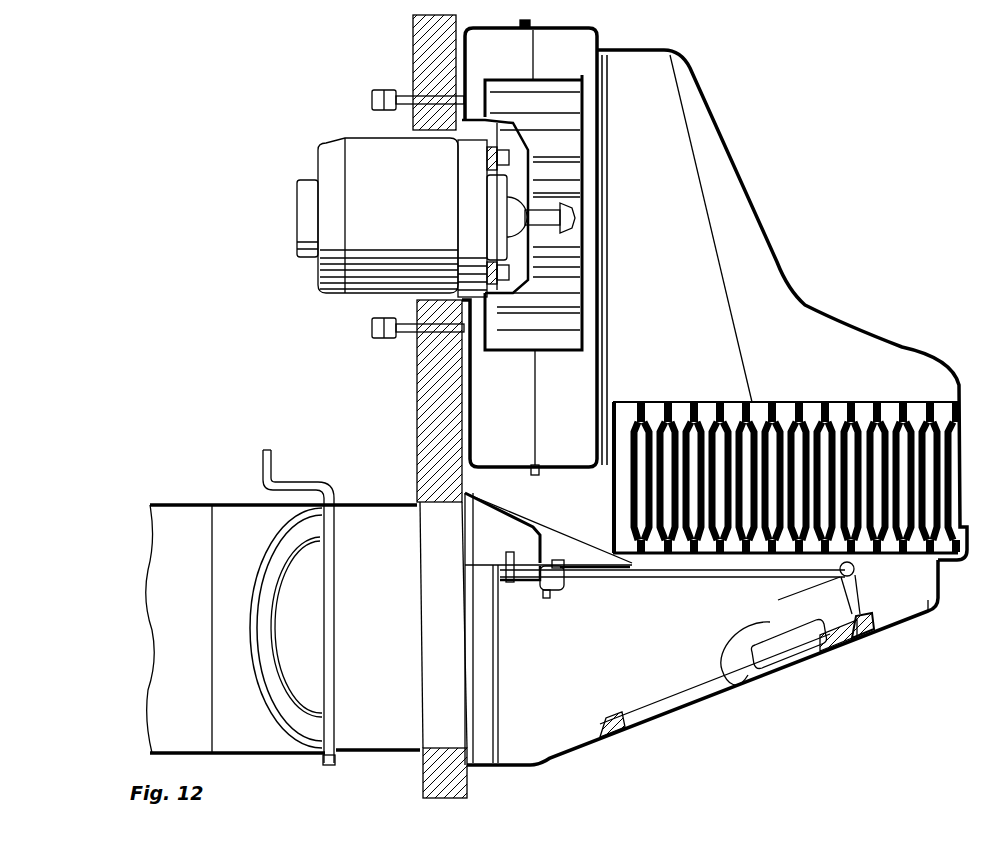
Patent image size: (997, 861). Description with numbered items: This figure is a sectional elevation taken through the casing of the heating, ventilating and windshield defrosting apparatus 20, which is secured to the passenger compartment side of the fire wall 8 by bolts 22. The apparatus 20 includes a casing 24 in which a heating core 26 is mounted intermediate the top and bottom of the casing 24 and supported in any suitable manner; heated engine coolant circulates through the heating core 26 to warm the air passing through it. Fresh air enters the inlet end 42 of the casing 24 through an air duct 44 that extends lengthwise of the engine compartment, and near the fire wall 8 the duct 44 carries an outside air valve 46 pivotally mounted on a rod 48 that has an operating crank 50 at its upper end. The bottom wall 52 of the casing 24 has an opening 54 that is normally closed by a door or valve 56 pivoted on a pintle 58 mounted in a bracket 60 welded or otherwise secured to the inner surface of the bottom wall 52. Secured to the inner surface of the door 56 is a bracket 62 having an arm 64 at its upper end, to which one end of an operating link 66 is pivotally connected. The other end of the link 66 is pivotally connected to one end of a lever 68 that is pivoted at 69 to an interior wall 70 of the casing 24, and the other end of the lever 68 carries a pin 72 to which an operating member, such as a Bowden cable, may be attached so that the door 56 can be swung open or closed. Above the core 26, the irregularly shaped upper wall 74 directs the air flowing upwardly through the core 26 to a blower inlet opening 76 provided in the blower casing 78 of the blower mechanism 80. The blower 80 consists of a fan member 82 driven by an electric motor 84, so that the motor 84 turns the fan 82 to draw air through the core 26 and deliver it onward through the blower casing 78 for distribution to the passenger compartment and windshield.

The fire wall 8 is at (432, 790).
The heating, ventilating, and windshield defrosting apparatus 20 is at (790, 301).
The bolts 22 is at (372, 100).
The casing 24 is at (925, 612).
The heating core 26 is at (818, 400).
The inlet end 42 is at (476, 722).
The air duct 44 is at (192, 505).
The valve 46 is at (305, 722).
The rod 48 is at (326, 762).
The operating crank 50 is at (273, 456).
The bottom wall 52 is at (565, 762).
The opening 54 is at (620, 735).
The door or valve 56 is at (735, 700).
The pintle 58 is at (864, 616).
The bracket 60 is at (905, 615).
The bracket 62 is at (770, 625).
The arm 64 is at (860, 572).
The operating link 66 is at (700, 573).
The lever 68 is at (520, 590).
The pivot 69 is at (556, 560).
The interior wall 70 is at (580, 562).
The pin 72 is at (505, 556).
The upper wall 74 is at (732, 182).
The blower inlet opening 76 is at (600, 178).
The blower casing 78 is at (598, 30).
The blower mechanism 80 is at (520, 22).
The fan member 82 is at (556, 352).
The electric motor 84 is at (330, 165).